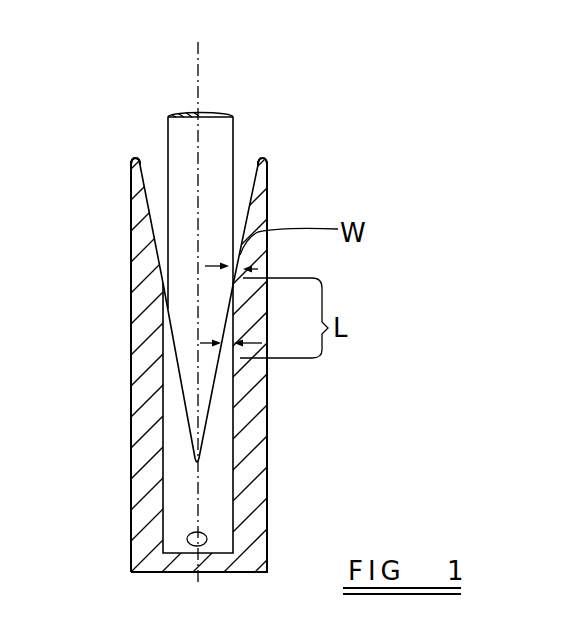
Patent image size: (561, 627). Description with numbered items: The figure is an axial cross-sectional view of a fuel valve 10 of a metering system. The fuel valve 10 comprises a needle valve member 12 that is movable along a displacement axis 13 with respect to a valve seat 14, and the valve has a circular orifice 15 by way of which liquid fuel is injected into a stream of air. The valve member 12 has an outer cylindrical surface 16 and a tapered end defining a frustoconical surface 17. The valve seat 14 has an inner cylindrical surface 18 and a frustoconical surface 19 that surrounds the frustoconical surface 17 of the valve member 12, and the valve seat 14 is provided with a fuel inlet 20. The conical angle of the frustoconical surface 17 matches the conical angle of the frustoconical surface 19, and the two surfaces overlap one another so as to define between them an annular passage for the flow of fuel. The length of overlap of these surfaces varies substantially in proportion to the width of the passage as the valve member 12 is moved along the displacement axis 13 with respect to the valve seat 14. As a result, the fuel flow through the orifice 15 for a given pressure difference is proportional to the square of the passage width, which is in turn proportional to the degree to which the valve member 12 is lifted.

The fuel valve 10 is at (302, 393).
The needle valve member 12 is at (234, 126).
The displacement axis 13 is at (199, 80).
The valve seat 14 is at (236, 336).
The circular orifice 15 is at (250, 176).
The outer cylindrical surface 16 is at (168, 155).
The frustoconical surface 17 is at (179, 363).
The inner cylindrical surface 18 is at (162, 489).
The frustoconical surface 19 is at (147, 230).
The fuel inlet 20 is at (207, 533).